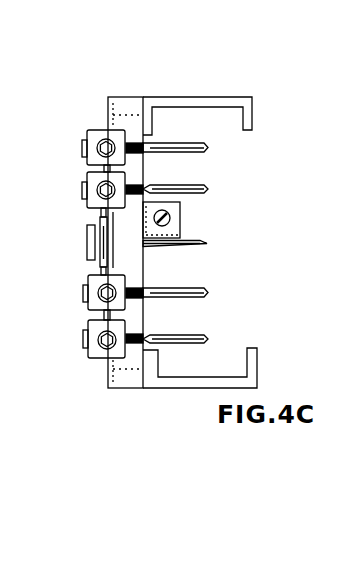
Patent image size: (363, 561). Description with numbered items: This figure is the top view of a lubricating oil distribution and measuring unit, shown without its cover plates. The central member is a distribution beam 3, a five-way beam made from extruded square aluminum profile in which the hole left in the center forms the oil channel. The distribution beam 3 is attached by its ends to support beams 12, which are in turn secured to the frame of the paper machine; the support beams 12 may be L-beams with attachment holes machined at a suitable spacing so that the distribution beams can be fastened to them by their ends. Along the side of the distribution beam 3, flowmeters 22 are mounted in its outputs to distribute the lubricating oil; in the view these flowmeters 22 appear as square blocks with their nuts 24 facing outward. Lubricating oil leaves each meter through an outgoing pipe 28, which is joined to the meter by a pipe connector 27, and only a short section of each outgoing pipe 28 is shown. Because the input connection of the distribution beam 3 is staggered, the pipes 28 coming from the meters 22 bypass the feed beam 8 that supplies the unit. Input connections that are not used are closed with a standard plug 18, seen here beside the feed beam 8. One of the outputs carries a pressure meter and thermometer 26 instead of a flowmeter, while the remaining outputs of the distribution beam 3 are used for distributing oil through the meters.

The distribution beam 3 is at (137, 263).
The support beam 12 is at (195, 96).
The flowmeter 22 is at (93, 203).
The nut 24 is at (83, 155).
The pipe connector 27 is at (145, 153).
The outgoing pipe 28 is at (212, 155).
The standard plug 18 is at (195, 229).
The feed beam 8 is at (207, 244).
The pressure meter and thermometer 26 is at (87, 245).